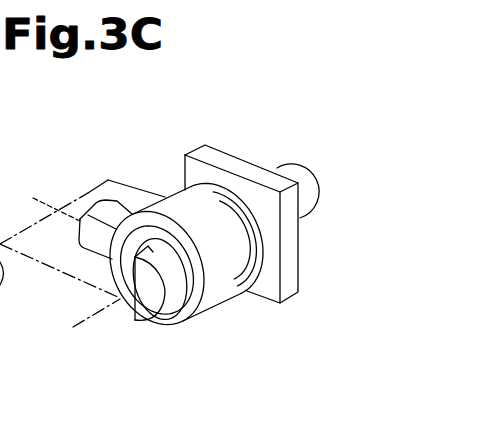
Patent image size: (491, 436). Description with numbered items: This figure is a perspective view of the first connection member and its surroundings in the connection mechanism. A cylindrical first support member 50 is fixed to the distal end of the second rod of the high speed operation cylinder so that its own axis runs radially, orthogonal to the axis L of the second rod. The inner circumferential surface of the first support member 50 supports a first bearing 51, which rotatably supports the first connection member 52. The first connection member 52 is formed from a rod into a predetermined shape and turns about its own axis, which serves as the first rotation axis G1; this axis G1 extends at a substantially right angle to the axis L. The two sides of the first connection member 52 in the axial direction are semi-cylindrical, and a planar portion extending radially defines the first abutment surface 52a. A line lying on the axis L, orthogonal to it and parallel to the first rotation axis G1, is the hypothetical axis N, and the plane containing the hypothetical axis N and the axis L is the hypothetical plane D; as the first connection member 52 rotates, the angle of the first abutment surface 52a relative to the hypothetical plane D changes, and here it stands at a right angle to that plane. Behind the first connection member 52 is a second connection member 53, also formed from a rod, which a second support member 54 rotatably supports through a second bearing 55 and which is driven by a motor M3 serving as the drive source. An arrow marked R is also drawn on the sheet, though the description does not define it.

The first support member 50 is at (227, 294).
The first bearing 51 is at (197, 305).
The first connection member 52 is at (173, 311).
The first abutment surface 52a is at (128, 298).
The second connection member 53 is at (232, 206).
The second support member 54 is at (295, 242).
The second bearing 55 is at (251, 257).
The motor M3 is at (313, 188).
The rotation direction R is at (311, 310).
The first rotation axis G1 is at (90, 320).
The axis of the second rod L is at (52, 205).
The hypothetical axis N is at (108, 180).
The hypothetical plane D is at (134, 190).